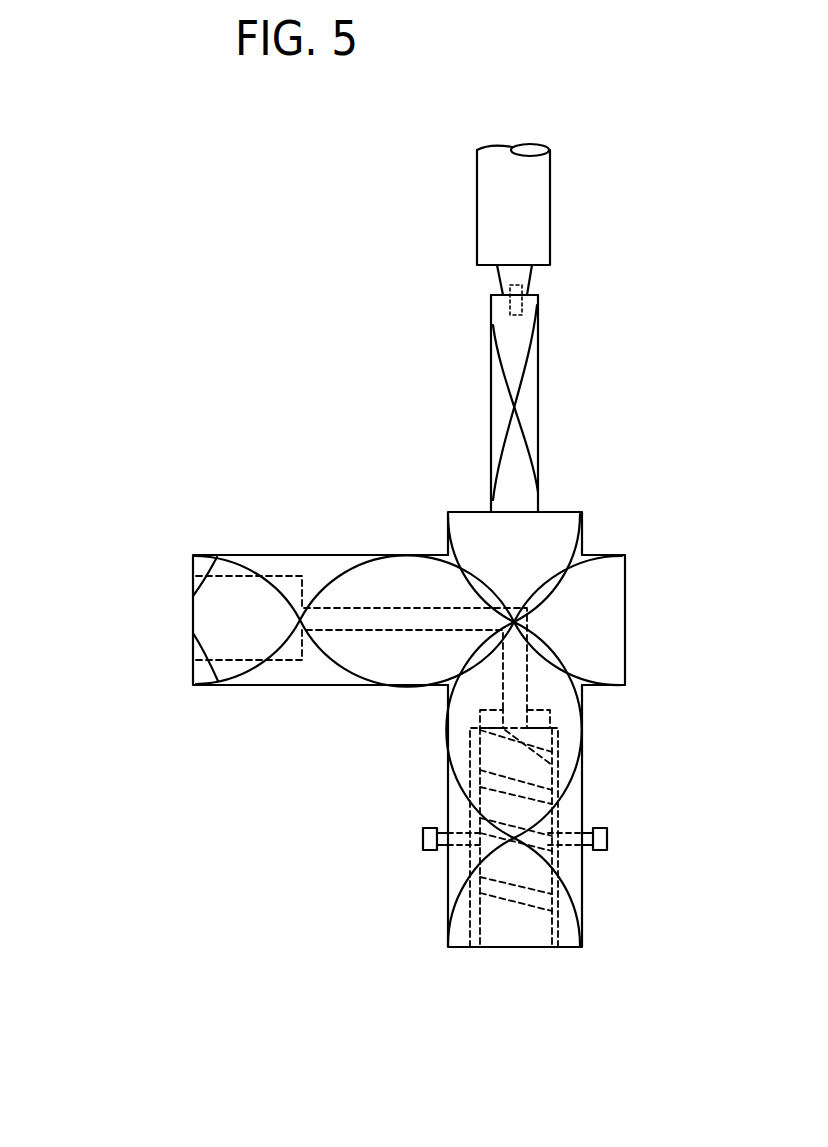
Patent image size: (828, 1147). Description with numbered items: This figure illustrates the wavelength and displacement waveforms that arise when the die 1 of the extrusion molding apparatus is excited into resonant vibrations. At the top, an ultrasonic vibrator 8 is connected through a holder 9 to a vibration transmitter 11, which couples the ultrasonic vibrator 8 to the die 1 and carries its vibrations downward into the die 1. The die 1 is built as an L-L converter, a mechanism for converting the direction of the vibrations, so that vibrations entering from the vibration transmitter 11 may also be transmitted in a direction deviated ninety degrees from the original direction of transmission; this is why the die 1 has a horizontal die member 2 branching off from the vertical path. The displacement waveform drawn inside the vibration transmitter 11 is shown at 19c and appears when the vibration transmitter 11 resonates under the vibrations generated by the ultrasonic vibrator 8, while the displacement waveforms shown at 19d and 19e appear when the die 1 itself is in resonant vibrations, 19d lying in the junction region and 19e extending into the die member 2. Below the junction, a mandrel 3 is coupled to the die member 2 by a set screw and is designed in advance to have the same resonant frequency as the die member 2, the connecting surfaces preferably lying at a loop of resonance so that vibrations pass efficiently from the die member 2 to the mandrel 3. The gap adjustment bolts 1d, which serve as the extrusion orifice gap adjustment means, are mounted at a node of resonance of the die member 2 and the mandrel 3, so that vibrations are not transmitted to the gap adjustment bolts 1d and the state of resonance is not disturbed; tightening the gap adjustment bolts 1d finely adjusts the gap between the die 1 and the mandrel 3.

The die 1 is at (403, 700).
The gap adjustment bolt 1d is at (428, 851).
The die member 2 is at (294, 673).
The mandrel 3 is at (538, 933).
The ultrasonic vibrator 8 is at (541, 212).
The light source holder 9 is at (518, 306).
The vibration transmitter 11 is at (530, 398).
The displacement waveform 19c is at (525, 378).
The displacement waveform 19d is at (578, 512).
The displacement waveform 19e is at (193, 636).